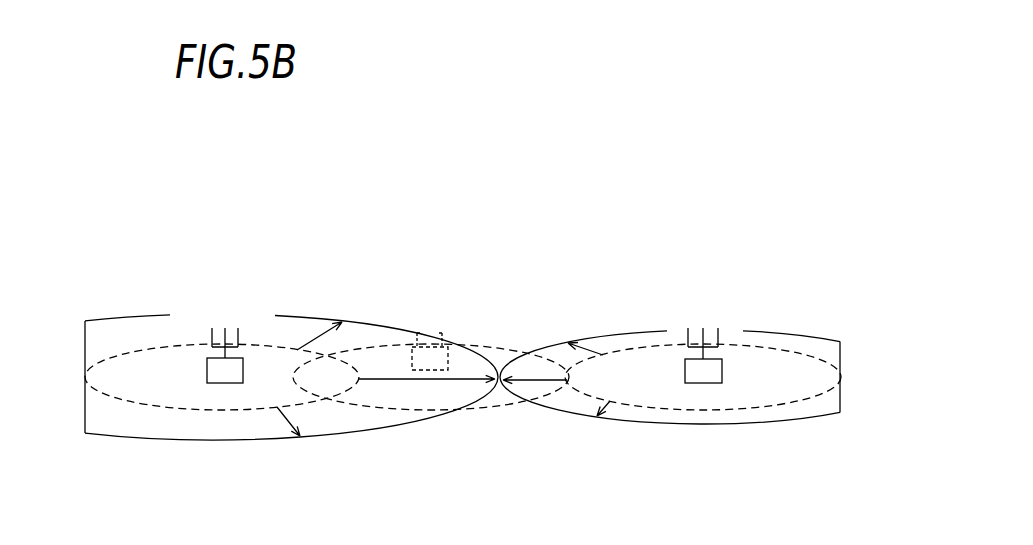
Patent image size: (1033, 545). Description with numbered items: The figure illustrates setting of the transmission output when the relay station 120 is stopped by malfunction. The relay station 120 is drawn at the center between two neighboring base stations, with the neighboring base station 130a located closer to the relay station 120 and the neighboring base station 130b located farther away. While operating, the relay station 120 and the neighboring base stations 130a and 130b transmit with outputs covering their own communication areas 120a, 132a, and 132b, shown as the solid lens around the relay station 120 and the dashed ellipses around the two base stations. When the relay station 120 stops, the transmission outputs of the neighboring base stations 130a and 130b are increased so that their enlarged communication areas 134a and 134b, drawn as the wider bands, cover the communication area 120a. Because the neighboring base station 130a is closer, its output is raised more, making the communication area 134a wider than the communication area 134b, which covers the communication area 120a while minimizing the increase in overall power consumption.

The relay station 120 is at (444, 346).
The communication area of the relay station 120a is at (478, 403).
The neighboring base station 130a is at (243, 358).
The neighboring base station 130b is at (720, 358).
The communication area of the neighboring base station 132a is at (236, 411).
The communication area of the neighboring base station 132b is at (653, 409).
The communication area of the neighboring base station 134a is at (150, 440).
The communication area of the neighboring base station 134b is at (744, 427).